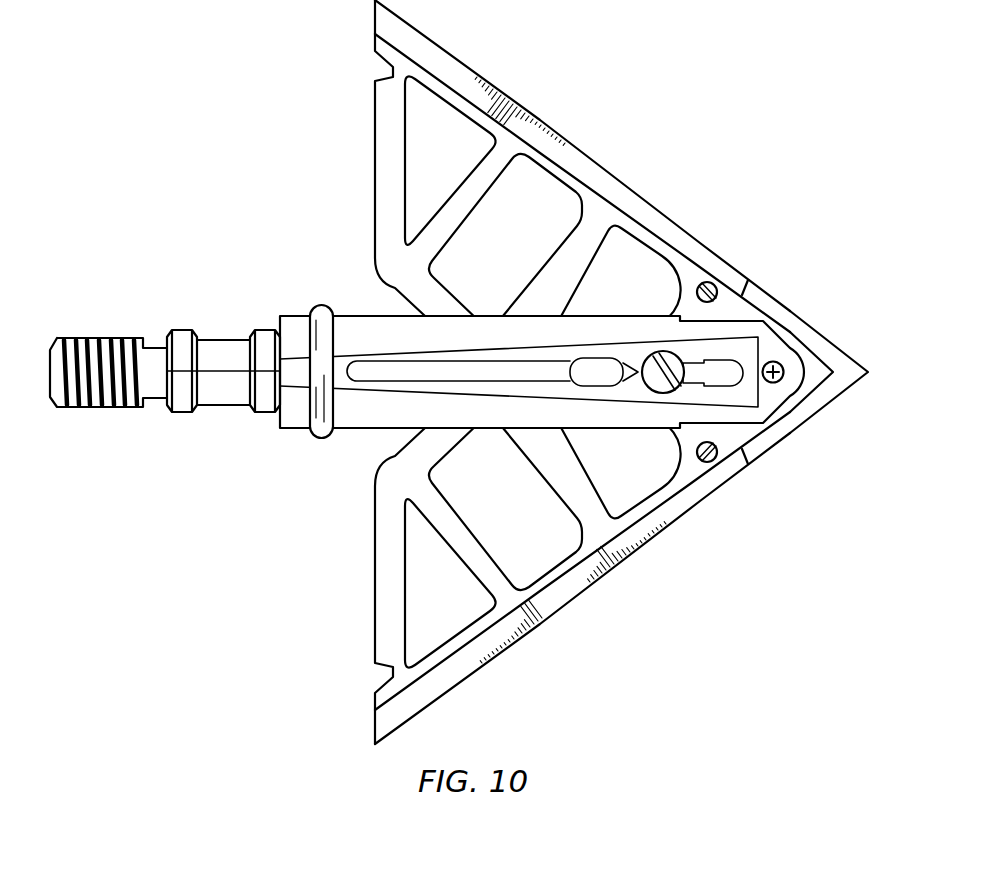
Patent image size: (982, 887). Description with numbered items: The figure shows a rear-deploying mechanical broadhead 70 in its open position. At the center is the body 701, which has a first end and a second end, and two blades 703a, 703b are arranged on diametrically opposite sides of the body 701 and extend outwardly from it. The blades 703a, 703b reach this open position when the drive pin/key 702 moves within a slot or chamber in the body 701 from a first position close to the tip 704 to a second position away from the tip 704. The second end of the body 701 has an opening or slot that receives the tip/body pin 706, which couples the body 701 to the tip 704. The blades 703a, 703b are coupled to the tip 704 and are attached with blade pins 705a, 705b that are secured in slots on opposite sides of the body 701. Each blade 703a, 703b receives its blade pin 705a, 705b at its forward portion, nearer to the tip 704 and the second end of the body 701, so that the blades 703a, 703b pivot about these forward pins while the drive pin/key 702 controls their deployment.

The rear-deploying mechanical broadhead 70 is at (471, 372).
The body 701 is at (107, 410).
The drive pin/key 702 is at (661, 373).
The blade 703a is at (388, 160).
The blade 703b is at (390, 548).
The tip 704 is at (827, 353).
The blade pin 705a is at (714, 282).
The blade pin 705b is at (714, 462).
The tip/body pin 706 is at (778, 380).